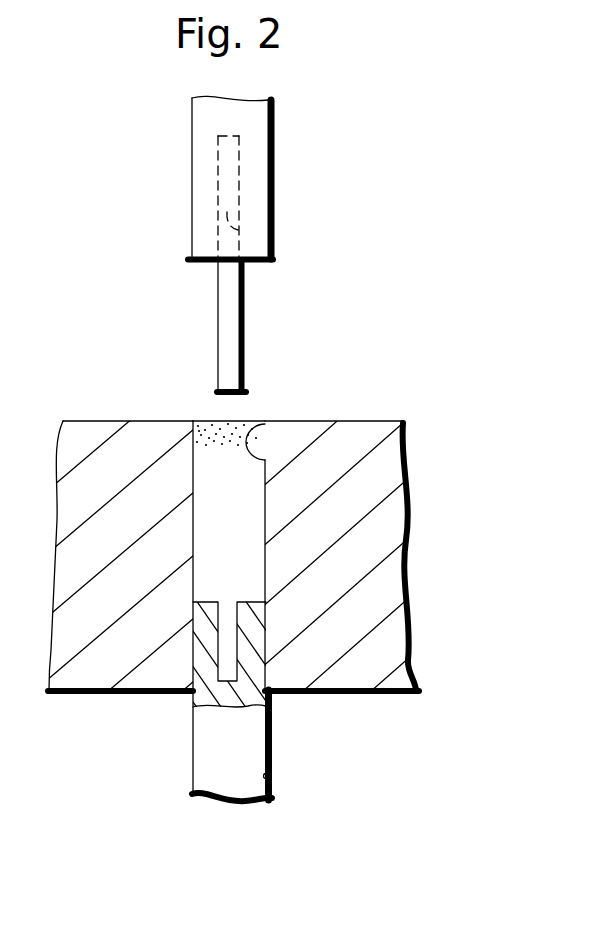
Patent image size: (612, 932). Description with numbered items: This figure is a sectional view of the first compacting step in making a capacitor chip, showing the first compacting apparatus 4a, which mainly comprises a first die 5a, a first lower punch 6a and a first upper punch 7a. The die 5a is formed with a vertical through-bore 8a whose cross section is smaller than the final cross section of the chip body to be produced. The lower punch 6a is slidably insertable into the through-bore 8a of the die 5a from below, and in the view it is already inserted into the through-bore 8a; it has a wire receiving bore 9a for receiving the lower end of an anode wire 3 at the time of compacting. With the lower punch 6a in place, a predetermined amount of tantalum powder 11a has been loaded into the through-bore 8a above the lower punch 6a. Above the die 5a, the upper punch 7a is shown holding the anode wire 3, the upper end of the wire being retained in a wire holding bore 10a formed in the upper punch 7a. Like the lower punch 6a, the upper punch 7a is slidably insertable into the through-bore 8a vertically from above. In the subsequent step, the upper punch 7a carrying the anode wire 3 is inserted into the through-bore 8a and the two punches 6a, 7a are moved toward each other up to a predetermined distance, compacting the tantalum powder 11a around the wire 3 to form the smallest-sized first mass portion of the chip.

The anode wire 3 is at (247, 308).
The first compacting apparatus 4a is at (113, 394).
The first die 5a is at (363, 421).
The first lower punch 6a is at (190, 744).
The first upper punch 7a is at (275, 163).
The through-bore 8a is at (251, 428).
The wire receiving bore 9a is at (228, 637).
The wire holding bore 10a is at (240, 230).
The tantalum powder 11a is at (208, 421).